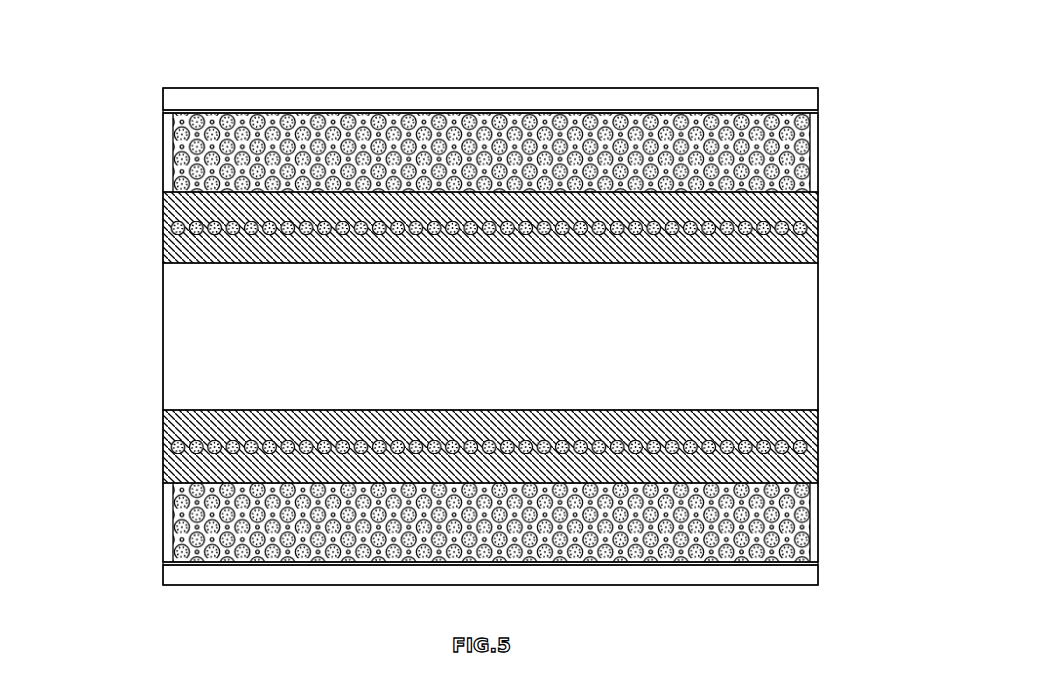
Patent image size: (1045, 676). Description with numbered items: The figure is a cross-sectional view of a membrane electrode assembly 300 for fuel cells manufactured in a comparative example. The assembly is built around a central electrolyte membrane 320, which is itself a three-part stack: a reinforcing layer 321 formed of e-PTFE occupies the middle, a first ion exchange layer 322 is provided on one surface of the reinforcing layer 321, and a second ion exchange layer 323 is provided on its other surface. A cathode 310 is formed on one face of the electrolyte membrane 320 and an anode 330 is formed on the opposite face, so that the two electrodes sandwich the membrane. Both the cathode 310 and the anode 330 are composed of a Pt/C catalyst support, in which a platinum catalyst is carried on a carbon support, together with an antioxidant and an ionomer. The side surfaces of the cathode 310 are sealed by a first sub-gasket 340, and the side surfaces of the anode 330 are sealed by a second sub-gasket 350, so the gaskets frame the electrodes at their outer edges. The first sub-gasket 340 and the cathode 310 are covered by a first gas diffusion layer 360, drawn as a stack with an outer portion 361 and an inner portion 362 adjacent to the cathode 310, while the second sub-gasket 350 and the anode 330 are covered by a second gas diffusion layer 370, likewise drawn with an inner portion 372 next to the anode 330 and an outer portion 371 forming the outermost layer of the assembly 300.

The membrane electrode assembly 300 is at (803, 44).
The cathode 310 is at (783, 143).
The electrolyte membrane 320 is at (558, 337).
The reinforcing layer 321 is at (812, 338).
The first ion exchange layer 322 is at (813, 240).
The second ion exchange layer 323 is at (532, 446).
The anode 330 is at (785, 528).
The first sub-gasket 340 is at (494, 152).
The second sub-gasket 350 is at (494, 522).
The first gas diffusion layer 360 is at (424, 100).
The upper current collector layer 361 is at (176, 96).
The upper adhesive layer 362 is at (178, 111).
The second gas diffusion layer 370 is at (424, 575).
The lower current collector layer 371 is at (167, 578).
The lower adhesive layer 372 is at (167, 563).